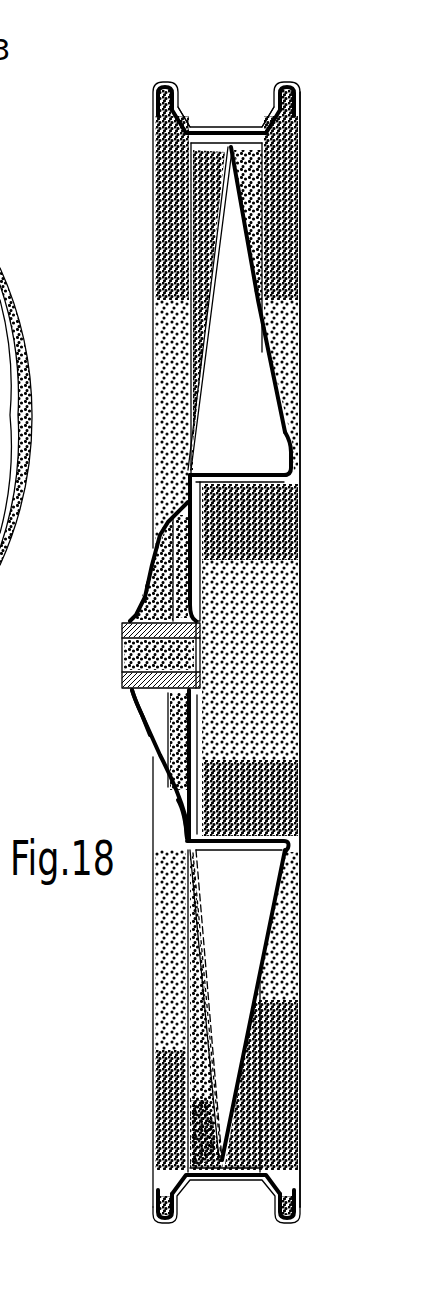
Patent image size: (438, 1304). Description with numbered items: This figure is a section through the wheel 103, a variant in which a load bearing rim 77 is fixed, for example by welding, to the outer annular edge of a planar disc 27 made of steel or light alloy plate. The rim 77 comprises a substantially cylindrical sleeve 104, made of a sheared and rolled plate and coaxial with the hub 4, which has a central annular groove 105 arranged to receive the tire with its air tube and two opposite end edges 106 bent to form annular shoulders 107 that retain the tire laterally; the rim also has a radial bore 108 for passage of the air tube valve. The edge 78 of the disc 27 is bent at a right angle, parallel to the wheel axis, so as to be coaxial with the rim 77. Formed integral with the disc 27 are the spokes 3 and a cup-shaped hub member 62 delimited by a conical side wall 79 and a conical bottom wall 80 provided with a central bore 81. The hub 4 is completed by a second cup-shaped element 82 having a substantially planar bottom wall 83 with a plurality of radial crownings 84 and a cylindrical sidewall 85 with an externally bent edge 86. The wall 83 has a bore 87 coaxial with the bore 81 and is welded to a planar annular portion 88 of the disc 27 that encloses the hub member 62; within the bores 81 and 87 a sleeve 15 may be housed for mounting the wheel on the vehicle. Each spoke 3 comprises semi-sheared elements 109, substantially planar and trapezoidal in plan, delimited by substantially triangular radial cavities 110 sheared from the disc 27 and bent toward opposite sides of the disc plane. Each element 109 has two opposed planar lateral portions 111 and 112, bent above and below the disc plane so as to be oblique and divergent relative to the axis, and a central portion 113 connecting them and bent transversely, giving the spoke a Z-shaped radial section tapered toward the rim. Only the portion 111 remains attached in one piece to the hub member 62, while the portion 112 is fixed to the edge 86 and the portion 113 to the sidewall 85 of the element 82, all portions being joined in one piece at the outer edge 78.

The spoke 3 is at (210, 250).
The hub 4 is at (315, 609).
The sleeve 15 is at (140, 709).
The disc 27 is at (227, 148).
The hub member 62 is at (144, 542).
The load bearing rim 77 is at (195, 110).
The edge 78 is at (215, 1180).
The conical side wall 79 is at (178, 510).
The bottom wall 80 is at (148, 726).
The central bore 81 is at (126, 618).
The second cup-shaped element 82 is at (268, 822).
The bottom wall 83 is at (193, 752).
The radial crownings 84 is at (197, 588).
The cylindrical sidewall 85 is at (245, 482).
The edge 86 is at (284, 456).
The bore 87 is at (202, 618).
The planar annular portion 88 is at (180, 814).
The wheel 103 is at (292, 47).
The sleeve 104 is at (261, 122).
The central annular groove 105 is at (226, 127).
The end edges 106 is at (160, 1215).
The annular shoulders 107 is at (155, 82).
The radial bore 108 is at (245, 1180).
The semi-sheared elements 109 is at (247, 424).
The radial cavities 110 is at (8, 327).
The lateral portion 111 is at (200, 987).
The lateral portion 112 is at (257, 947).
The central portion 113 is at (228, 310).